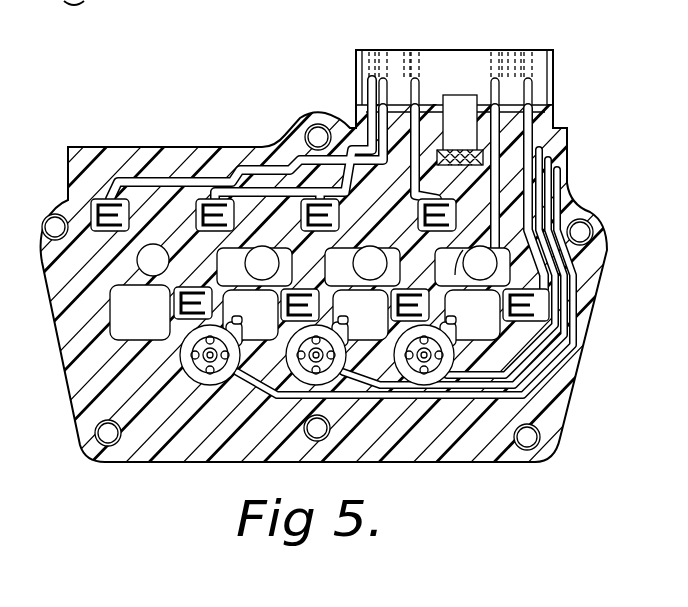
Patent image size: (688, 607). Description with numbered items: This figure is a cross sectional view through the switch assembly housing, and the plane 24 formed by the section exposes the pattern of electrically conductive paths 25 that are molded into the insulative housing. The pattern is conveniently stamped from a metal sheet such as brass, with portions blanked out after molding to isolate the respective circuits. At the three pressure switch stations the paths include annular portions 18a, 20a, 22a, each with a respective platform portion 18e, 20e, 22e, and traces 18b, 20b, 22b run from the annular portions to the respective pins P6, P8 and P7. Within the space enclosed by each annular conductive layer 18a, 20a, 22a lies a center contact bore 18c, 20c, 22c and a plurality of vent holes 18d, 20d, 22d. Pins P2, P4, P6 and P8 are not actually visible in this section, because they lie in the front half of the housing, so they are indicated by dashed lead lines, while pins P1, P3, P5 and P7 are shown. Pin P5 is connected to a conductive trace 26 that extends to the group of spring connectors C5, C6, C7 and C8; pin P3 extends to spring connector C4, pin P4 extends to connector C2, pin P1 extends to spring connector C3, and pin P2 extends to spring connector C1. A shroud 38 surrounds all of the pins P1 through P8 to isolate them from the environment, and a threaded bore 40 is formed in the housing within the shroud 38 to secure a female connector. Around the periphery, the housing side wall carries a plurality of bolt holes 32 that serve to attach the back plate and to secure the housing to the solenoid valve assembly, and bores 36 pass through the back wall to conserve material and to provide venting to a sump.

The plane 24 is at (445, 463).
The conductive paths 25 is at (569, 186).
The conductive trace 26 is at (465, 258).
The bolt holes 32 is at (55, 226).
The bores 36 is at (465, 258).
The shroud 38 is at (554, 99).
The threaded bore 40 is at (470, 95).
The pin P1 is at (383, 50).
The pin P2 is at (372, 50).
The pin P3 is at (415, 50).
The pin P4 is at (407, 50).
The pin P5 is at (495, 50).
The pin P6 is at (505, 50).
The pin P7 is at (530, 50).
The pin P8 is at (519, 50).
The spring connector C1 is at (125, 215).
The spring connector C2 is at (235, 215).
The spring connector C3 is at (340, 215).
The spring connector C4 is at (435, 199).
The spring connector C5 is at (503, 302).
The spring connector C6 is at (391, 302).
The spring connector C7 is at (281, 302).
The spring connector C8 is at (174, 300).
The annular portion 18a is at (200, 341).
The trace 18b is at (243, 338).
The center contact bore 18c is at (205, 355).
The vent holes 18d is at (215, 385).
The platform portion 18e is at (576, 357).
The annular portion 20a is at (312, 341).
The trace 20b is at (349, 338).
The center contact bore 20c is at (300, 360).
The vent holes 20d is at (300, 393).
The platform portion 20e is at (567, 333).
The annular portion 22a is at (426, 340).
The trace 22b is at (457, 338).
The center contact bore 22c is at (412, 365).
The vent holes 22d is at (404, 406).
The platform portion 22e is at (558, 305).